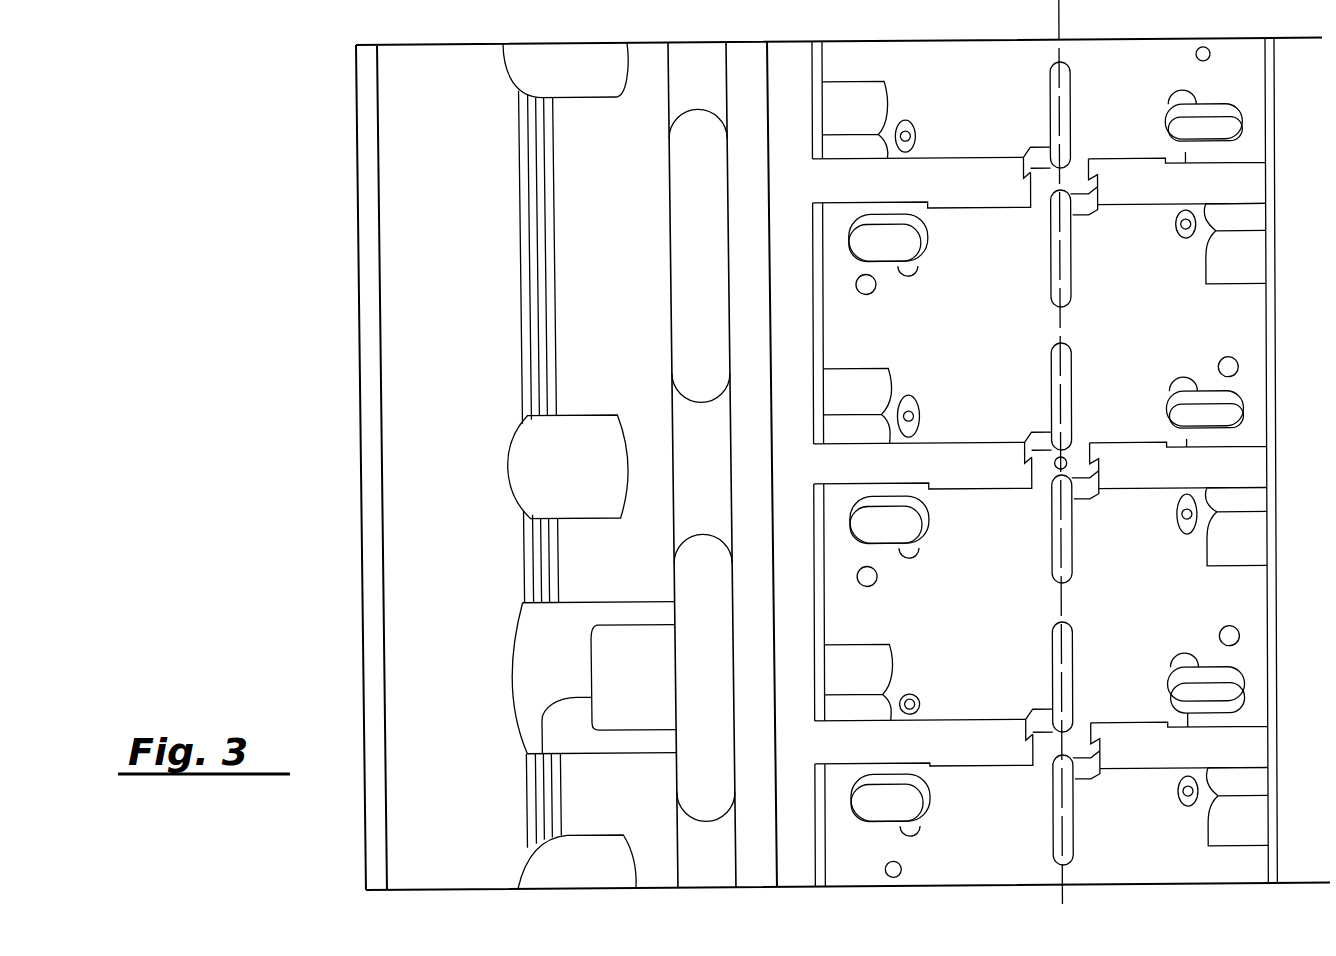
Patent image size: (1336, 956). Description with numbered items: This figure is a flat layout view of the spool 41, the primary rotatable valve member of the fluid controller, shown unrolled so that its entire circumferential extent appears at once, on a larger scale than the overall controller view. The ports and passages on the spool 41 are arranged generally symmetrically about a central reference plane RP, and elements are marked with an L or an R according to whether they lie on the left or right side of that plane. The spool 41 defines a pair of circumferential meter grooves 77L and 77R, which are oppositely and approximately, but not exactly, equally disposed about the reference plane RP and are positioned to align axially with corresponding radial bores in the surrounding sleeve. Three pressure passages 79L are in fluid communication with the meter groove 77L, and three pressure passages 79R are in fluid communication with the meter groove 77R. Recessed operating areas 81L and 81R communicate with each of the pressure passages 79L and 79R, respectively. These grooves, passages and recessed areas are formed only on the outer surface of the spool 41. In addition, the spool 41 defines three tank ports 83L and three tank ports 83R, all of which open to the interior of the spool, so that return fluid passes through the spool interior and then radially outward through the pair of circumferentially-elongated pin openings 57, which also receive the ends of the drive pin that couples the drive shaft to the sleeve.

The spool 41 is at (635, 30).
The pin openings 57 is at (667, 297).
The meter groove 77L is at (780, 62).
The meter groove 77R is at (1293, 58).
The reference plane RP is at (1063, 28).
The pressure passages 79L is at (972, 170).
The pressure passages 79R is at (1122, 187).
The recessed operating areas 81L is at (868, 377).
The recessed operating areas 81R is at (1232, 270).
The tank ports 83L is at (868, 577).
The tank ports 83R is at (1223, 633).